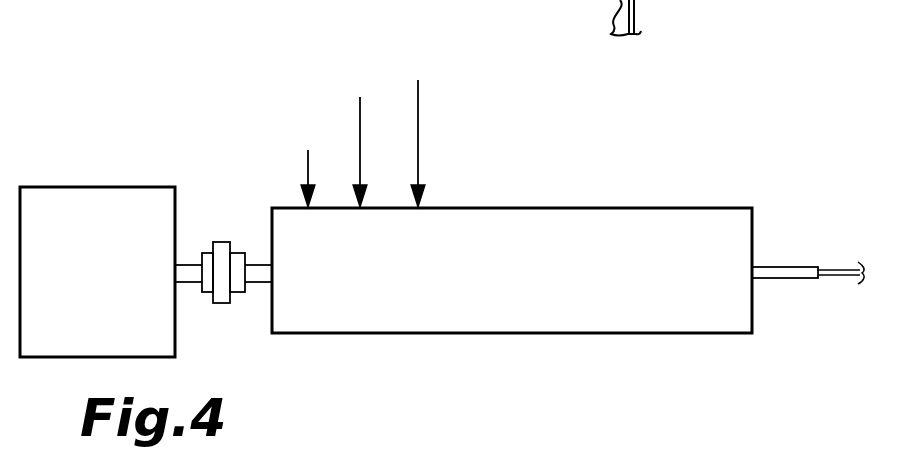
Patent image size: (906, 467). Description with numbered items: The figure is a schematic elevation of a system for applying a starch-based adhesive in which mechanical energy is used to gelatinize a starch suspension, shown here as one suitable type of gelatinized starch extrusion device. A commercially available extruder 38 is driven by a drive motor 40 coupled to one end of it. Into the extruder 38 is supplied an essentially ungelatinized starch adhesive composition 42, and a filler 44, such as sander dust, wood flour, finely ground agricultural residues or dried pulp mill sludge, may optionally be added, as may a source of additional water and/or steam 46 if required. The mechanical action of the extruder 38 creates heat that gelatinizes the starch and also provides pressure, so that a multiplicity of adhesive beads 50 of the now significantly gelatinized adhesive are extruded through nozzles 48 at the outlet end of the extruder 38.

The extruder 38 is at (573, 285).
The drive motor 40 is at (125, 283).
The ungelatinized starch adhesive composition 42 is at (302, 155).
The filler 44 is at (360, 120).
The source of additional water and/or steam 46 is at (427, 103).
The nozzles 48 is at (793, 263).
The adhesive beads 50 is at (838, 281).